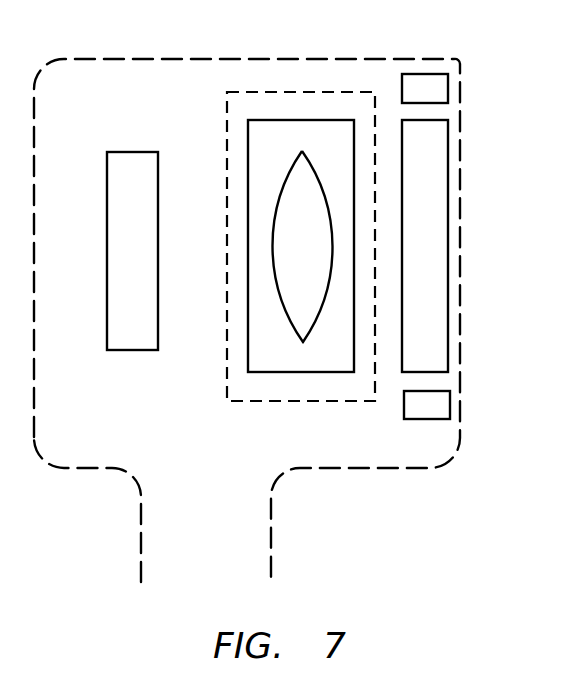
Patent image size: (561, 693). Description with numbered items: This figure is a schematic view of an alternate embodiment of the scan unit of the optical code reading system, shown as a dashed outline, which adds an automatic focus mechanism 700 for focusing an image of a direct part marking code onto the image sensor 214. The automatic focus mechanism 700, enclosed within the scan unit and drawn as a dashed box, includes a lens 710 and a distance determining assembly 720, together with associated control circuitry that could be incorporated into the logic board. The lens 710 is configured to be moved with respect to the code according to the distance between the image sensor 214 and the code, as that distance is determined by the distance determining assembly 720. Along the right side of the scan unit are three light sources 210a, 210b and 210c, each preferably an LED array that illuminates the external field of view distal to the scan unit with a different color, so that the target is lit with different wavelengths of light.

The automatic focus mechanism 700 is at (320, 91).
The lens 710 is at (307, 275).
The distance determining assembly 720 is at (320, 355).
The image sensor 214 is at (136, 174).
The light source 210a is at (430, 93).
The light source 210b is at (428, 177).
The light source 210c is at (433, 404).